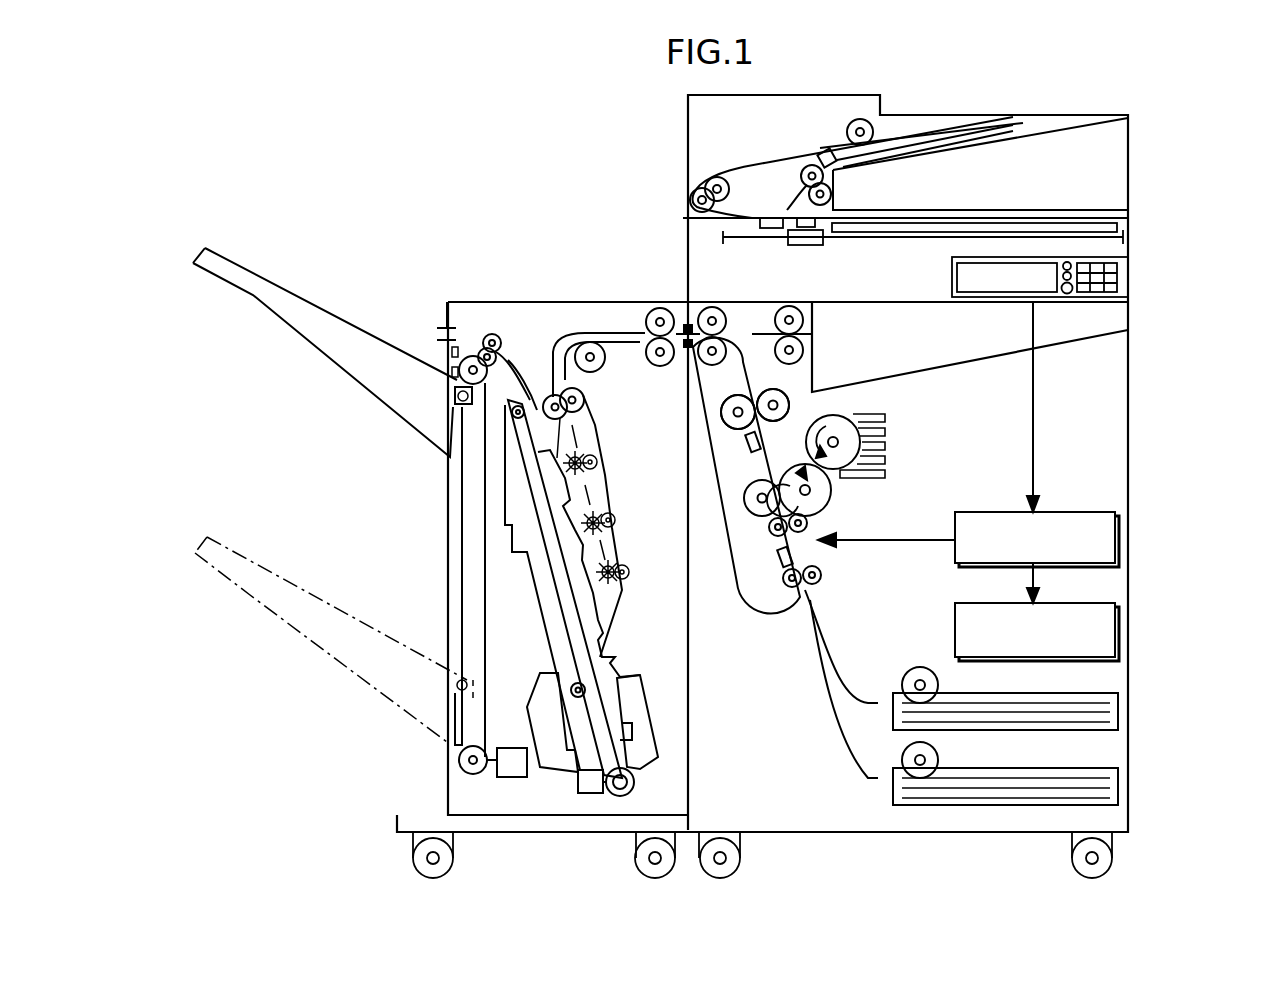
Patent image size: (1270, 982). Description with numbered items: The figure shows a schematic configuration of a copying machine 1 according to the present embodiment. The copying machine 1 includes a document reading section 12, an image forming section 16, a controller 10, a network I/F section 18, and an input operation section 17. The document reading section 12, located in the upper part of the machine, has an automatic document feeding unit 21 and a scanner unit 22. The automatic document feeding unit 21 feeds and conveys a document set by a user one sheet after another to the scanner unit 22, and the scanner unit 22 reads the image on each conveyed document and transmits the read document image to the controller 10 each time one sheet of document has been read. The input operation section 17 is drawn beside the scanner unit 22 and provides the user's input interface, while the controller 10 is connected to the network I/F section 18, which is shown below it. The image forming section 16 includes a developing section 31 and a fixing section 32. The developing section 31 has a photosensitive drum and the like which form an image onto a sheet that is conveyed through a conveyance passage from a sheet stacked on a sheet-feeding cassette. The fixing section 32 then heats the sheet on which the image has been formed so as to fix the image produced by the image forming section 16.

The copying machine 1 is at (480, 168).
The document reading section 12 is at (1155, 163).
The automatic document feeding unit 21 is at (764, 141).
The scanner unit 22 is at (830, 286).
The input operation section 17 is at (1128, 275).
The controller 10 is at (1117, 533).
The network I/F section 18 is at (1117, 623).
The image forming section 16 is at (772, 576).
The developing section 31 is at (828, 512).
The fixing section 32 is at (725, 388).